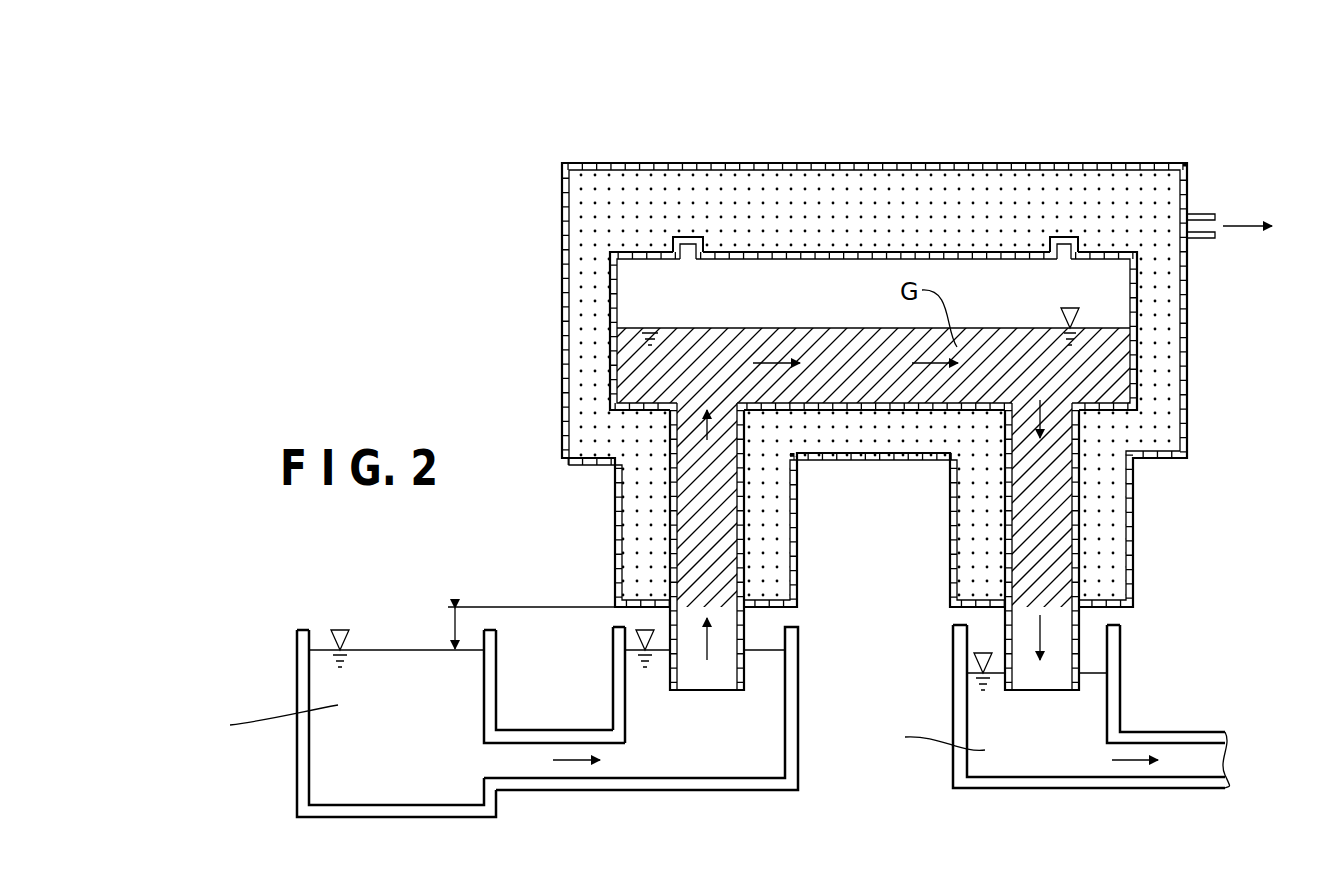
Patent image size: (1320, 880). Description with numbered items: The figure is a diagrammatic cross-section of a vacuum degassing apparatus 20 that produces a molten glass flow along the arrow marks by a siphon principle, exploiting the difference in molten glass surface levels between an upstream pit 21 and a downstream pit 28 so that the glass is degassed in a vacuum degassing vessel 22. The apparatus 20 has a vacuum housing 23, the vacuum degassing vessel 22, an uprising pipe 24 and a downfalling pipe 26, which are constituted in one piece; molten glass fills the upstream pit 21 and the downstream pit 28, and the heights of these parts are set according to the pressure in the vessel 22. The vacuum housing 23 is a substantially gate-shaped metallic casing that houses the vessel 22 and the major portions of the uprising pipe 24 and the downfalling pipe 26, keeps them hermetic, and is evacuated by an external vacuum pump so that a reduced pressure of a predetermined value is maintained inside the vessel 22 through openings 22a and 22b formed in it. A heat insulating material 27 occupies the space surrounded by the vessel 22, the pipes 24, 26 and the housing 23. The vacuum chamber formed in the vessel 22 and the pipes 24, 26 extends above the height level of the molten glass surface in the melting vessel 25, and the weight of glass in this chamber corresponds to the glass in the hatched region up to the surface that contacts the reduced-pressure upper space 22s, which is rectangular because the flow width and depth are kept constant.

The vacuum degassing apparatus 20 is at (921, 102).
The upstream pit 21 is at (790, 652).
The vacuum degassing vessel 22 is at (810, 250).
The opening 22a is at (686, 237).
The opening 22b is at (1062, 237).
The upper space 22s is at (1107, 293).
The vacuum housing 23 is at (760, 163).
The uprising pipe 24 is at (742, 553).
The melting vessel 25 is at (300, 667).
The downfalling pipe 26 is at (1072, 503).
The heat insulating material 27 is at (590, 361).
The downstream pit 28 is at (1113, 657).